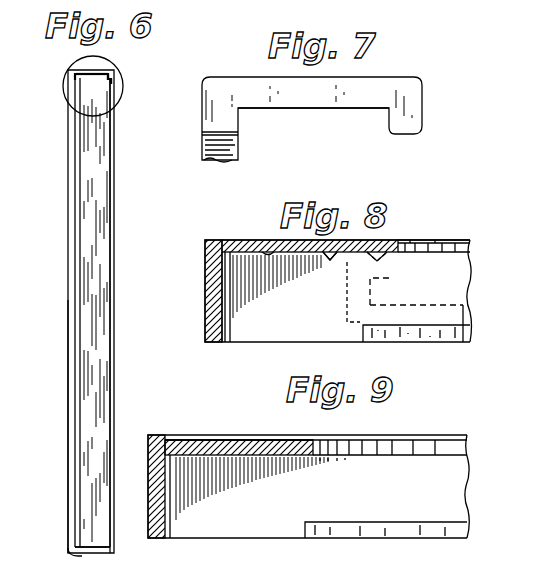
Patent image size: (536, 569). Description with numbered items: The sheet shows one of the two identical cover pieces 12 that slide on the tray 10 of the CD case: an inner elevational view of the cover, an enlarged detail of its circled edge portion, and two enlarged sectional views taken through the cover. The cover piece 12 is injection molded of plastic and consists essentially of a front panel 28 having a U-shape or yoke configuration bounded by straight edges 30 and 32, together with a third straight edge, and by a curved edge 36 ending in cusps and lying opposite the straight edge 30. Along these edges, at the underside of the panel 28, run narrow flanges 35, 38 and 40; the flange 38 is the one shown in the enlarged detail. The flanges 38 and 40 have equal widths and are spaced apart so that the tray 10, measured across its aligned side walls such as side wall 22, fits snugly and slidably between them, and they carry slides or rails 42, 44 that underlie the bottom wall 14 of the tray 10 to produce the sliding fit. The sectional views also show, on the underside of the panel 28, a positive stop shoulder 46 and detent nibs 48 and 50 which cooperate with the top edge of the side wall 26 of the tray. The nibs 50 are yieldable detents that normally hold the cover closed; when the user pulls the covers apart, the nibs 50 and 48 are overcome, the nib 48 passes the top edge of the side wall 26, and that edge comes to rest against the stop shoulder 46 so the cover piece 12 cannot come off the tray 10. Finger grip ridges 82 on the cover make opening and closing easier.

In FIG. 8, the tray 10 is at (338, 307).
In FIG. 6, the cover piece 12 is at (57, 174).
In FIG. 7, the cover piece 12 is at (241, 54).
In FIG. 8, the cover piece 12 is at (235, 221).
In FIG. 9, the cover piece 12 is at (211, 413).
In FIG. 8, the bottom wall 14 is at (428, 322).
In FIG. 7, the side wall 22 is at (233, 5).
In FIG. 8, the side wall 26 is at (416, 287).
In FIG. 6, the front panel 28 is at (68, 150).
In FIG. 7, the front panel 28 is at (194, 151).
In FIG. 8, the front panel 28 is at (275, 245).
In FIG. 9, the front panel 28 is at (255, 440).
In FIG. 8, the straight edge 30 is at (205, 278).
In FIG. 9, the straight edge 30 is at (148, 475).
In FIG. 6, the straight edge 32 is at (80, 72).
In FIG. 6, the flange 35 is at (98, 349).
In FIG. 8, the flange 35 is at (205, 276).
In FIG. 9, the flange 35 is at (170, 493).
In FIG. 6, the curved edge 36 is at (68, 384).
In FIG. 6, the flange 38 is at (100, 72).
In FIG. 7, the flange 38 is at (308, 98).
In FIG. 8, the flange 38 is at (240, 323).
In FIG. 9, the flange 38 is at (165, 517).
In FIG. 6, the flange 40 is at (76, 553).
In FIG. 6, the slide or rail 42 is at (117, 78).
In FIG. 8, the slide or rail 42 is at (393, 342).
In FIG. 9, the slide or rail 42 is at (360, 525).
In FIG. 6, the slide or rail 44 is at (104, 546).
In FIG. 8, the stop shoulder 46 is at (368, 261).
In FIG. 8, the detent nib 48 is at (333, 262).
In FIG. 8, the detent nib 50 is at (248, 257).
In FIG. 9, the finger grip ridge 82 is at (190, 437).